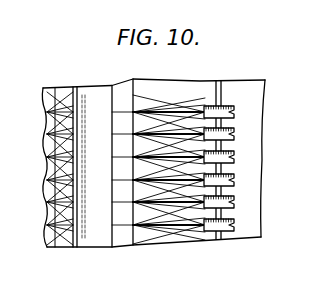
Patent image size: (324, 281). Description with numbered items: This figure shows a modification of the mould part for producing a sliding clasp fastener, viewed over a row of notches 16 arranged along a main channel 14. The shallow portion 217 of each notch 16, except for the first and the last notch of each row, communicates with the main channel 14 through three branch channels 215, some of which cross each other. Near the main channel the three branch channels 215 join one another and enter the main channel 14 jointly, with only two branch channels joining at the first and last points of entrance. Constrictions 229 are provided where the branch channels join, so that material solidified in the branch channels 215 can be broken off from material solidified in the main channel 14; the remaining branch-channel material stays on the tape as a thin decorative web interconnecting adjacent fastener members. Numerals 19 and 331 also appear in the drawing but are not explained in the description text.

The main channel 14 is at (98, 92).
The housing 19 is at (140, 80).
The constrictions 229 is at (136, 125).
The branch channels 215 is at (155, 124).
The shallow portion 217 is at (228, 124).
The notch 16 is at (235, 133).
The reference 331 is at (312, 218).